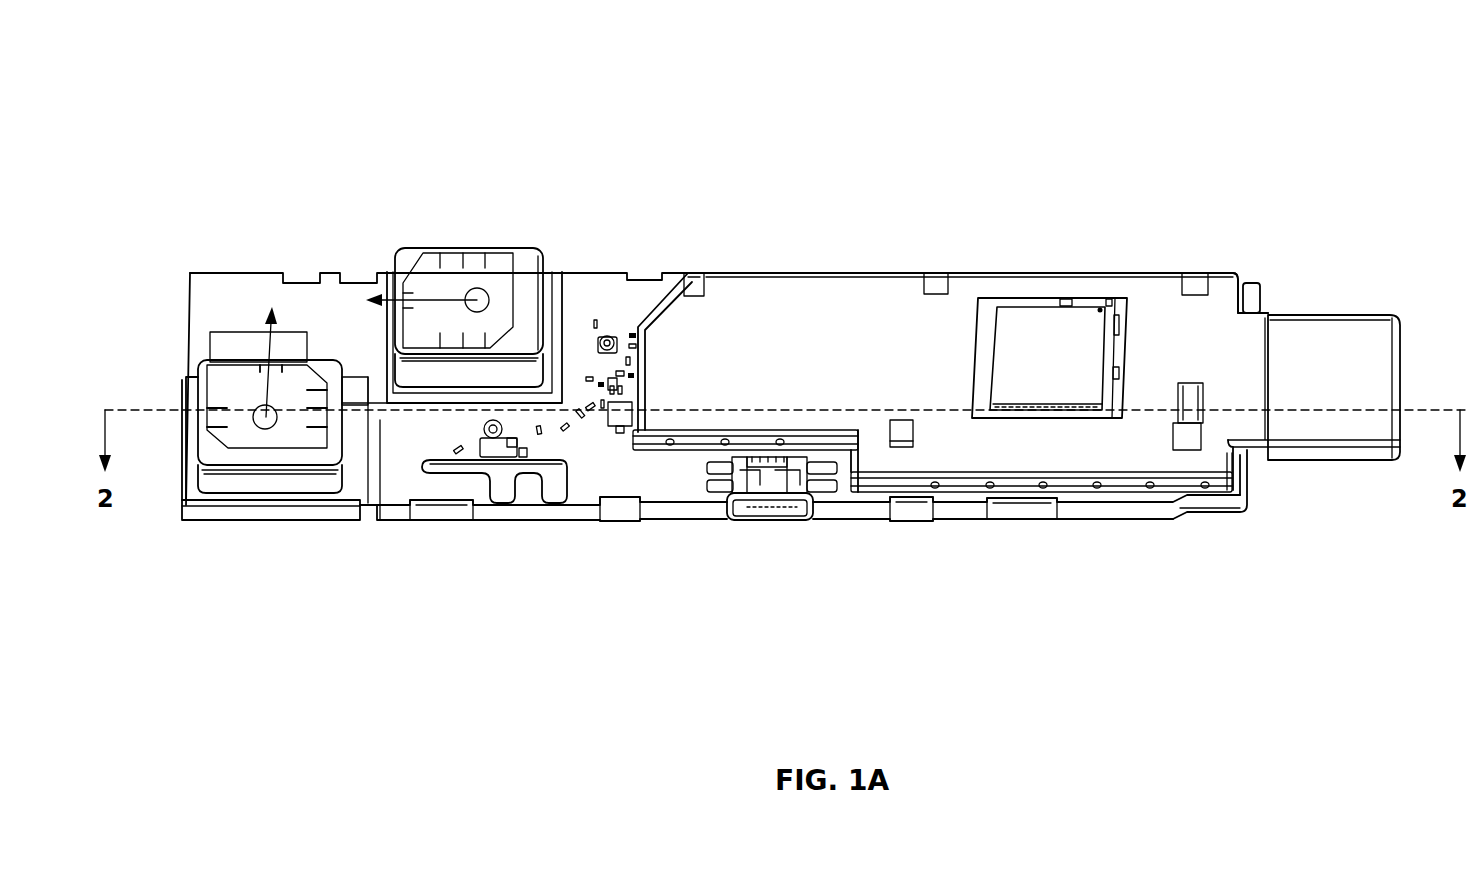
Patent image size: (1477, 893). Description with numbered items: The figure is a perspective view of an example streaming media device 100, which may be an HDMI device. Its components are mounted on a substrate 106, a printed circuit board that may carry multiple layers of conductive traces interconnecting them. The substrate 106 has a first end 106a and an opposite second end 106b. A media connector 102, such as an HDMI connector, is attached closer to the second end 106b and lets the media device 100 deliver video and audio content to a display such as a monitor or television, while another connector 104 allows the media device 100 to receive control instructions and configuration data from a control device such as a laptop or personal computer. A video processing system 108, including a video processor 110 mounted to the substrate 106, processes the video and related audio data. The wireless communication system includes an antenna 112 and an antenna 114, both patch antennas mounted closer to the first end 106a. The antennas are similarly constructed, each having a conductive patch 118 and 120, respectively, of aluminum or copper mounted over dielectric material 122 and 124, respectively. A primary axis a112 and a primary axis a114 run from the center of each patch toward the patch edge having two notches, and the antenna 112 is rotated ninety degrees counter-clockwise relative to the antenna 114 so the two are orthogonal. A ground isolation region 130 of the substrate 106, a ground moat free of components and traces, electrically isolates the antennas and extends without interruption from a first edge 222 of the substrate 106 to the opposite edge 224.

The media device 100 is at (212, 68).
The media connector 102 is at (1310, 495).
The connector 104 is at (780, 550).
The substrate 106 is at (577, 497).
The first end 106a is at (170, 350).
The second end 106b is at (1298, 298).
The video processing system 108 is at (868, 282).
The video processor 110 is at (1042, 318).
The antenna 112 is at (480, 218).
The antenna 114 is at (322, 354).
The conductive patch 118 is at (508, 267).
The conductive patch 120 is at (233, 385).
The dielectric material 122 is at (530, 265).
The dielectric material 124 is at (205, 453).
The ground isolation region 130 is at (560, 308).
The first edge 222 is at (683, 508).
The opposite edge 224 is at (800, 272).
The primary axis a112 is at (440, 300).
The primary axis a114 is at (271, 362).